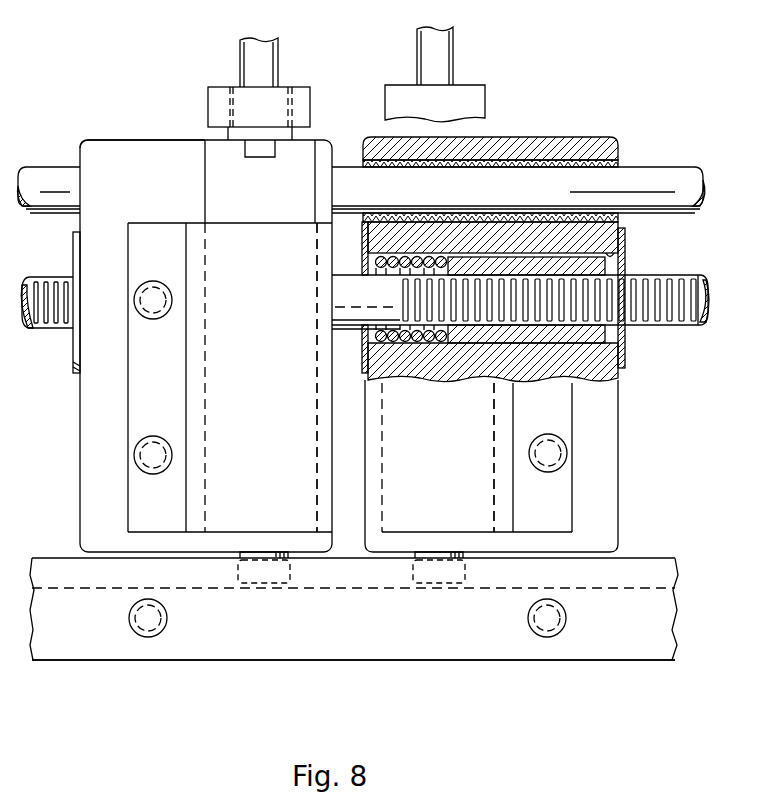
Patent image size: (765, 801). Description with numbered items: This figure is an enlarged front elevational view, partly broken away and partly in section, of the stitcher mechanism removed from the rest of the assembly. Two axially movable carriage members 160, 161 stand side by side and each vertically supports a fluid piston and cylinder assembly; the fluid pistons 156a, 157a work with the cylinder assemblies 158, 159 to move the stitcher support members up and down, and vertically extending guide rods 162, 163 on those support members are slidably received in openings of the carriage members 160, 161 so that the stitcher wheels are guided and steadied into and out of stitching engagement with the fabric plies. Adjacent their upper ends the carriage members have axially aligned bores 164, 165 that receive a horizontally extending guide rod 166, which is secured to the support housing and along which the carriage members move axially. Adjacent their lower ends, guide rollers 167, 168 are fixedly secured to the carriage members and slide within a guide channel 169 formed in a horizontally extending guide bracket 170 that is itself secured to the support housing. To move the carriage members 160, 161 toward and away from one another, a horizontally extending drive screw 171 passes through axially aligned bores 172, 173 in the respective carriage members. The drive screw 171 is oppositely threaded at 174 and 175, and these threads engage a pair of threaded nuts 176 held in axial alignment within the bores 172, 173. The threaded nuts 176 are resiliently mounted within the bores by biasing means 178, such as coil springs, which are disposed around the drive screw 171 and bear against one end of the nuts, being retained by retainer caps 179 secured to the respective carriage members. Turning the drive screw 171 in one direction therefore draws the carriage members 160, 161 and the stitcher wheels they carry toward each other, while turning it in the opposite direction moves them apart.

The fluid piston 156a is at (240, 62).
The fluid piston 157a is at (453, 68).
The cylinder assembly 158 is at (318, 427).
The cylinder assembly 159 is at (494, 424).
The carriage member 160 is at (80, 498).
The carriage member 161 is at (618, 505).
The guide rod 162 is at (270, 70).
The guide rod 163 is at (452, 40).
The bore 164 is at (80, 166).
The bore 165 is at (618, 158).
The guide rod 166 is at (678, 167).
The guide roller 167 is at (274, 580).
The guide roller 168 is at (446, 580).
The guide channel 169 is at (648, 588).
The guide bracket 170 is at (640, 655).
The drive screw 171 is at (690, 272).
The bore 172 is at (73, 275).
The bore 173 is at (625, 262).
The threaded portion 174 is at (48, 328).
The threaded portion 175 is at (682, 330).
The threaded nut 176 is at (620, 340).
The biasing means 178 is at (416, 378).
The retainer cap 179 is at (362, 370).